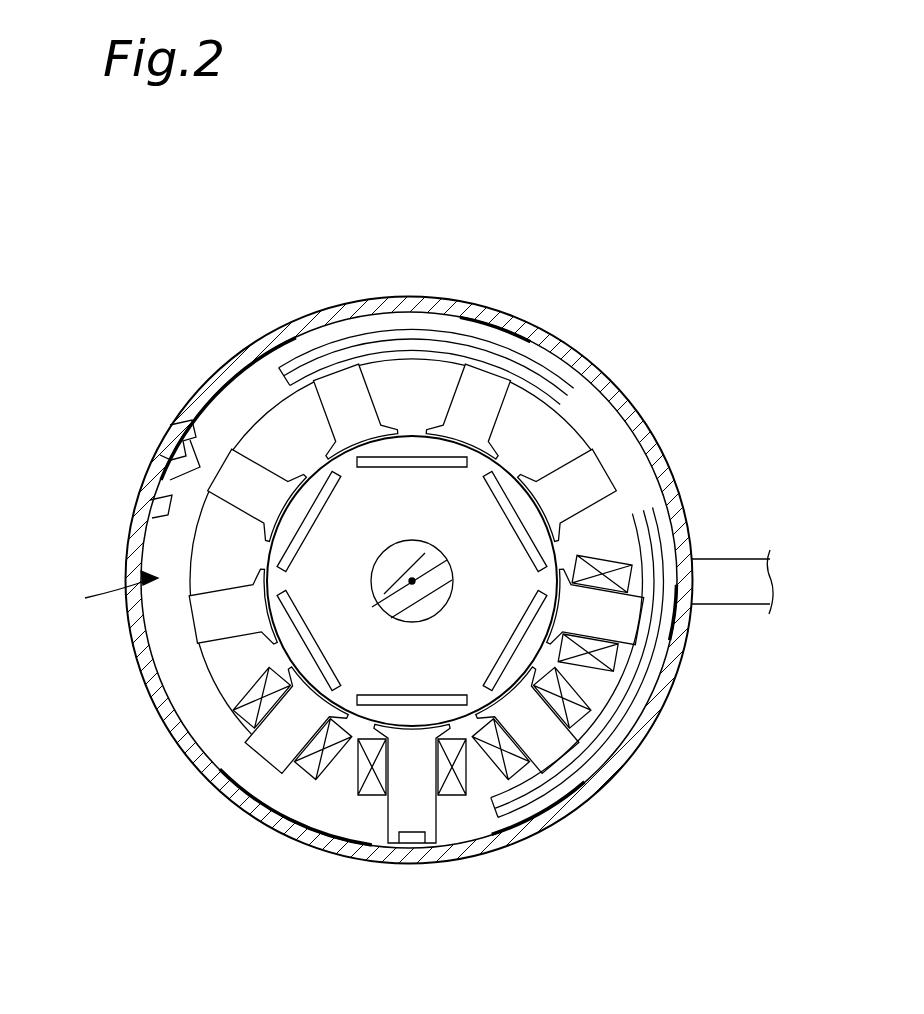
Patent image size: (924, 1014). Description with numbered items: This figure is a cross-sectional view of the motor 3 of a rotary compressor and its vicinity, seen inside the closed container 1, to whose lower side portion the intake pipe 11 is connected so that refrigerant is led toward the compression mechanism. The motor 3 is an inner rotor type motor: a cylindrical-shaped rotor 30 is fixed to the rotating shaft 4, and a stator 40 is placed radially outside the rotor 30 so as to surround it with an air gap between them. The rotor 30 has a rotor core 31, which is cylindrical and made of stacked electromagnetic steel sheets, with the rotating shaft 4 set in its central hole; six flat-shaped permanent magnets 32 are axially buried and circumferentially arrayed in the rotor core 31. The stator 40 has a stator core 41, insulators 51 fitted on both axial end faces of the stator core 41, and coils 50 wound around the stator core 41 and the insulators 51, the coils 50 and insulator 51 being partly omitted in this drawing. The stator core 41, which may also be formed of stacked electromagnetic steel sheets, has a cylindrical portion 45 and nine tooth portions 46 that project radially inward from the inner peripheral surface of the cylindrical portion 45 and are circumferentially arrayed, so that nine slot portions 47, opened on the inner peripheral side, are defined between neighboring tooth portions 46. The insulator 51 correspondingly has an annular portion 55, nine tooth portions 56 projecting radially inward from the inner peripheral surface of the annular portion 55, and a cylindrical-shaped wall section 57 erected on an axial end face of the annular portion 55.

The closed container 1 is at (500, 322).
The motor 3 is at (252, 398).
The rotating shaft 4 is at (407, 612).
The intake pipe 11 is at (740, 575).
The rotor 30 is at (412, 457).
The rotor core 31 is at (437, 675).
The magnets 32 is at (397, 705).
The stator 40 is at (230, 410).
The stator core 41 is at (96, 593).
The cylindrical portion 45 is at (168, 620).
The tooth portions 46 is at (240, 640).
The slot portions 47 is at (232, 535).
The coils 50 is at (262, 745).
The insulators 51 is at (645, 683).
The annular portion 55 is at (530, 412).
The tooth portions 56 is at (283, 388).
The wall section 57 is at (380, 340).